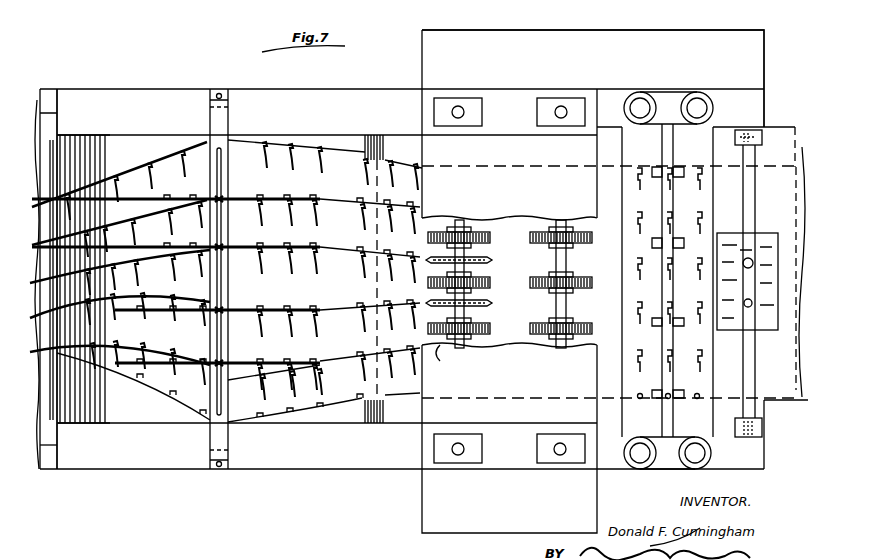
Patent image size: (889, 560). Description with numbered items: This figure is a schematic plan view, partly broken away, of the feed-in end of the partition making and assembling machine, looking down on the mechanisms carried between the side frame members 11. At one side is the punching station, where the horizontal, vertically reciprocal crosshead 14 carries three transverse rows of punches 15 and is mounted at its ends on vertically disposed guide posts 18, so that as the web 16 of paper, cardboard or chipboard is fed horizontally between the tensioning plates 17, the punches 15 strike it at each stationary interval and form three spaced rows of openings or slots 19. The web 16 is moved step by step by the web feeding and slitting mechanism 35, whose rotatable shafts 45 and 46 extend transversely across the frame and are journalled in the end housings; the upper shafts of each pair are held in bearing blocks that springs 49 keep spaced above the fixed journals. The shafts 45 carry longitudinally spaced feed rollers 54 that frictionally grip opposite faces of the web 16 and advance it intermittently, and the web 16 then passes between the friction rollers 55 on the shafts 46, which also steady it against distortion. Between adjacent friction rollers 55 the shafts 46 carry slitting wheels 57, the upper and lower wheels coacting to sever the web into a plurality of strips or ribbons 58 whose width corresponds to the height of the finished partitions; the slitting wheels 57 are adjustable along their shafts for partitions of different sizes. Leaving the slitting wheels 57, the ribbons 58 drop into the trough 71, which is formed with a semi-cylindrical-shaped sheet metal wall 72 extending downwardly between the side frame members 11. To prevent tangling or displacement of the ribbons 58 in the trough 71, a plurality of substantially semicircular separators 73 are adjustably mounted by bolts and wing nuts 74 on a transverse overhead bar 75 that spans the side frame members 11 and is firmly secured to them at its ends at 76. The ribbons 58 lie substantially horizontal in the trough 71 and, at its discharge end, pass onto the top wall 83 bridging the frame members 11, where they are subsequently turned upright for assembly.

The side frame members 11 is at (52, 92).
The crosshead 14 is at (695, 150).
The punches 15 is at (640, 230).
The web 16 is at (798, 167).
The tensioning plates 17 is at (740, 404).
The guide posts 18 is at (697, 108).
The openings or slots 19 is at (413, 185).
The web feeding and slitting mechanism 35 is at (506, 146).
The rotatable shafts 45 is at (572, 304).
The rotatable shafts 46 is at (440, 348).
The springs 49 is at (458, 106).
The feed rollers 54 is at (542, 322).
The friction rollers 55 is at (428, 300).
The slitting wheels 57 is at (492, 262).
The strips or ribbons 58 is at (325, 270).
The trough 71 is at (102, 142).
The semi-cylindrical-shaped sheet metal wall 72 is at (100, 423).
The separators 73 is at (184, 196).
The bolts and wing nuts 74 is at (226, 197).
The transverse overhead bar 75 is at (229, 118).
The bar end securement 76 is at (220, 95).
The top wall 83 is at (42, 386).